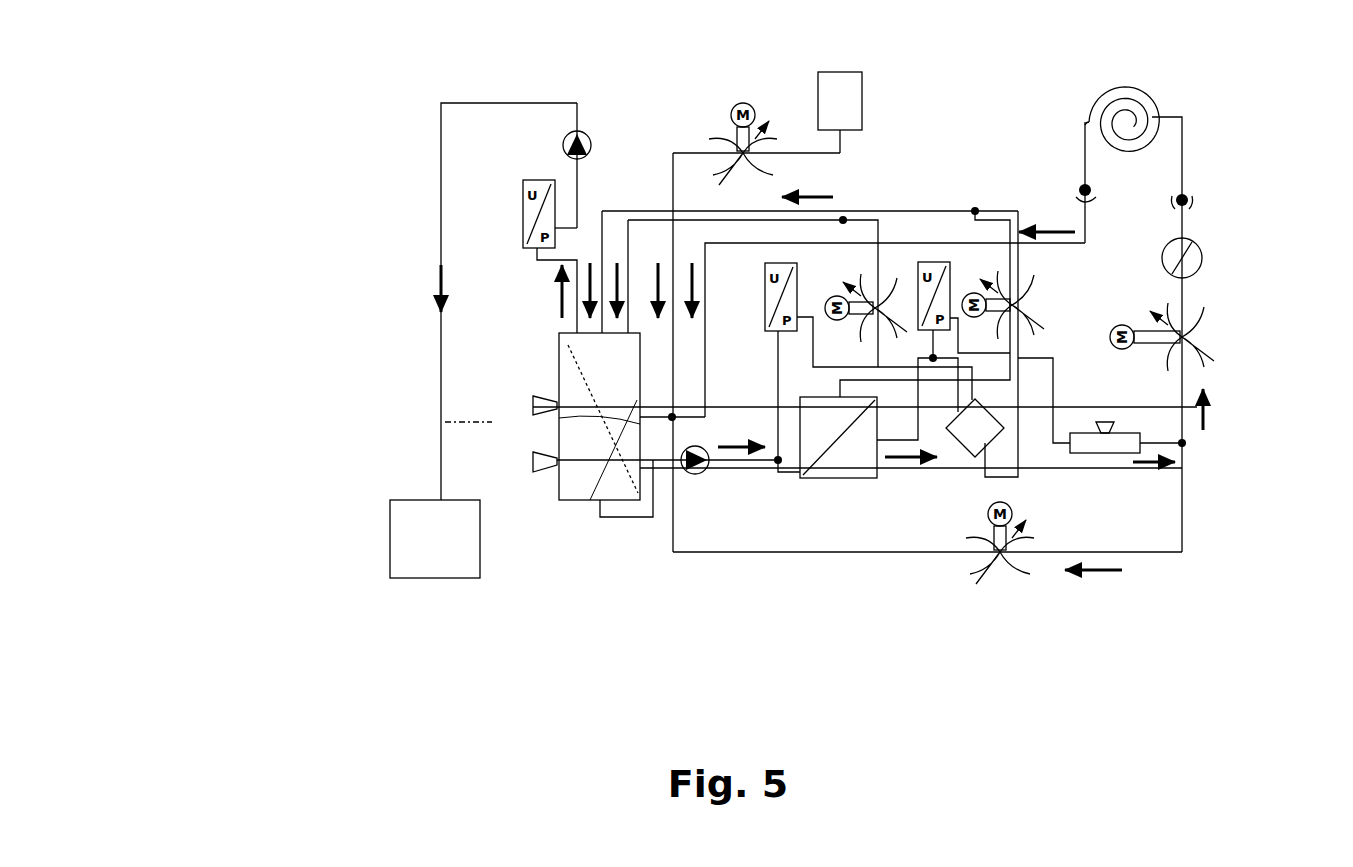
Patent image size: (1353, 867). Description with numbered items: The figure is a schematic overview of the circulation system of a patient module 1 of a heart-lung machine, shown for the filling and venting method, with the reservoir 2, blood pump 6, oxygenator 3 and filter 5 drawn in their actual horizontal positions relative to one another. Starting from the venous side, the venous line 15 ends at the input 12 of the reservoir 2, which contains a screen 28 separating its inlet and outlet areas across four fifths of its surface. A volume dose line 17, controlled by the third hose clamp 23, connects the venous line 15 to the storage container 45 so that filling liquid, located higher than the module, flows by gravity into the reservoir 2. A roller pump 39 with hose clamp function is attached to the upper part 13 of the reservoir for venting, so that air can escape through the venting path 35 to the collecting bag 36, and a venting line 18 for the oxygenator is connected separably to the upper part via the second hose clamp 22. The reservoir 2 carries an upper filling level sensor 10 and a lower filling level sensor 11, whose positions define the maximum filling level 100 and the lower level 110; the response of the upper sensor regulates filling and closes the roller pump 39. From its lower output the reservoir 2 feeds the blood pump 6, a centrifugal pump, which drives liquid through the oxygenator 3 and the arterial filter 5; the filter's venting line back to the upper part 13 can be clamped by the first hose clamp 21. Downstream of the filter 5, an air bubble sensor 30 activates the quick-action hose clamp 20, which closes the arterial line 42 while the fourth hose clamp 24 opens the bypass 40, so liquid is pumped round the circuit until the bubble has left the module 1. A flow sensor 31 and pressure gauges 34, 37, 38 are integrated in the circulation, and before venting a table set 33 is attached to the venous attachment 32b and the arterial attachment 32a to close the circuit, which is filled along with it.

The patient module 1 is at (330, 345).
The reservoir 2 is at (585, 481).
The oxygenator 3 is at (812, 470).
The arterial filter 5 is at (962, 448).
The blood pump 6 is at (694, 477).
The upper filling level sensor 10 is at (832, 399).
The lower filling level sensor 11 is at (624, 459).
The input from venous line to reservoir 12 is at (642, 418).
The upper part of reservoir 13 is at (559, 333).
The venous line 15 is at (673, 163).
The volume dose line 17 is at (722, 242).
The venting line for oxygenator 18 is at (935, 213).
The quick-action hose clamp 20 is at (1187, 336).
The first hose clamp 21 is at (880, 292).
The second hose clamp 22 is at (1021, 305).
The third hose clamp 23 is at (734, 130).
The fourth hose clamp 24 is at (1000, 563).
The screen 28 is at (590, 503).
The air bubble sensor 30 is at (1108, 444).
The flow sensor 31 is at (1186, 253).
The arterial attachment 32a is at (1188, 193).
The venous attachment 32b is at (1075, 180).
The table set 33 is at (1131, 129).
The pressure gauge 34 is at (938, 276).
The venting path 35 is at (437, 218).
The collecting bag 36 is at (441, 562).
The pressure gauge 37 is at (521, 195).
The pressure gauge 38 is at (791, 299).
The roller pump 39 is at (566, 136).
The bypass 40 is at (1151, 556).
The arterial line 42 is at (1187, 215).
The storage container 45 is at (841, 104).
The position of upper filling level sensor 100 is at (1128, 407).
The position of lower filling level sensor 110 is at (1195, 467).